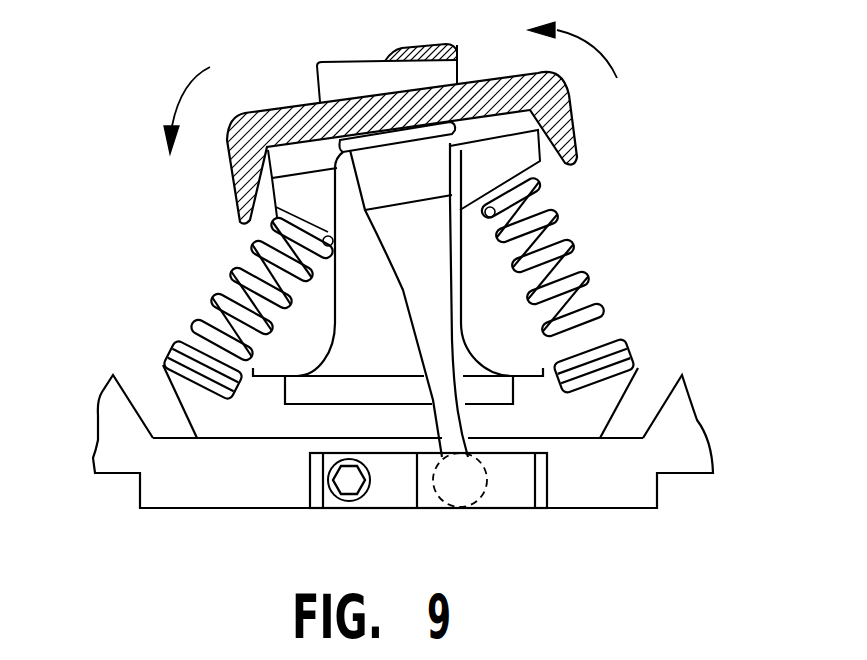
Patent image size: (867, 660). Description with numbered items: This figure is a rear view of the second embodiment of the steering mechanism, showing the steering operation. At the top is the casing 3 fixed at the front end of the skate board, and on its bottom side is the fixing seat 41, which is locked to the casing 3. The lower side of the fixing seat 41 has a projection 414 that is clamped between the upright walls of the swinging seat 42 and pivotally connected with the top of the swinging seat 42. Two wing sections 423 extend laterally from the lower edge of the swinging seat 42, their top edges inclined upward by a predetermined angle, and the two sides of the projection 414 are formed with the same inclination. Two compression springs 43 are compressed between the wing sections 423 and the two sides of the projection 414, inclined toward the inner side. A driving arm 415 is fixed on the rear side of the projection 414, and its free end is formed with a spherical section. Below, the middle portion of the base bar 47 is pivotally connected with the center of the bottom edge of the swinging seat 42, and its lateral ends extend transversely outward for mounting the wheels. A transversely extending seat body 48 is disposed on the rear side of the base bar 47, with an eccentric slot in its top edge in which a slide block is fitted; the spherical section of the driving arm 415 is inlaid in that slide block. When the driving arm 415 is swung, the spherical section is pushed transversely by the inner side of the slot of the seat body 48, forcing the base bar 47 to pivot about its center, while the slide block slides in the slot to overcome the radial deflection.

The casing 3 is at (513, 80).
The fixing seat 41 is at (567, 128).
The projection 414 is at (508, 153).
The swinging seat 42 is at (452, 268).
The compression springs 43 is at (242, 270).
The wing sections 423 is at (190, 405).
The driving arm 415 is at (430, 297).
The base bar 47 is at (627, 488).
The seat body 48 is at (467, 493).